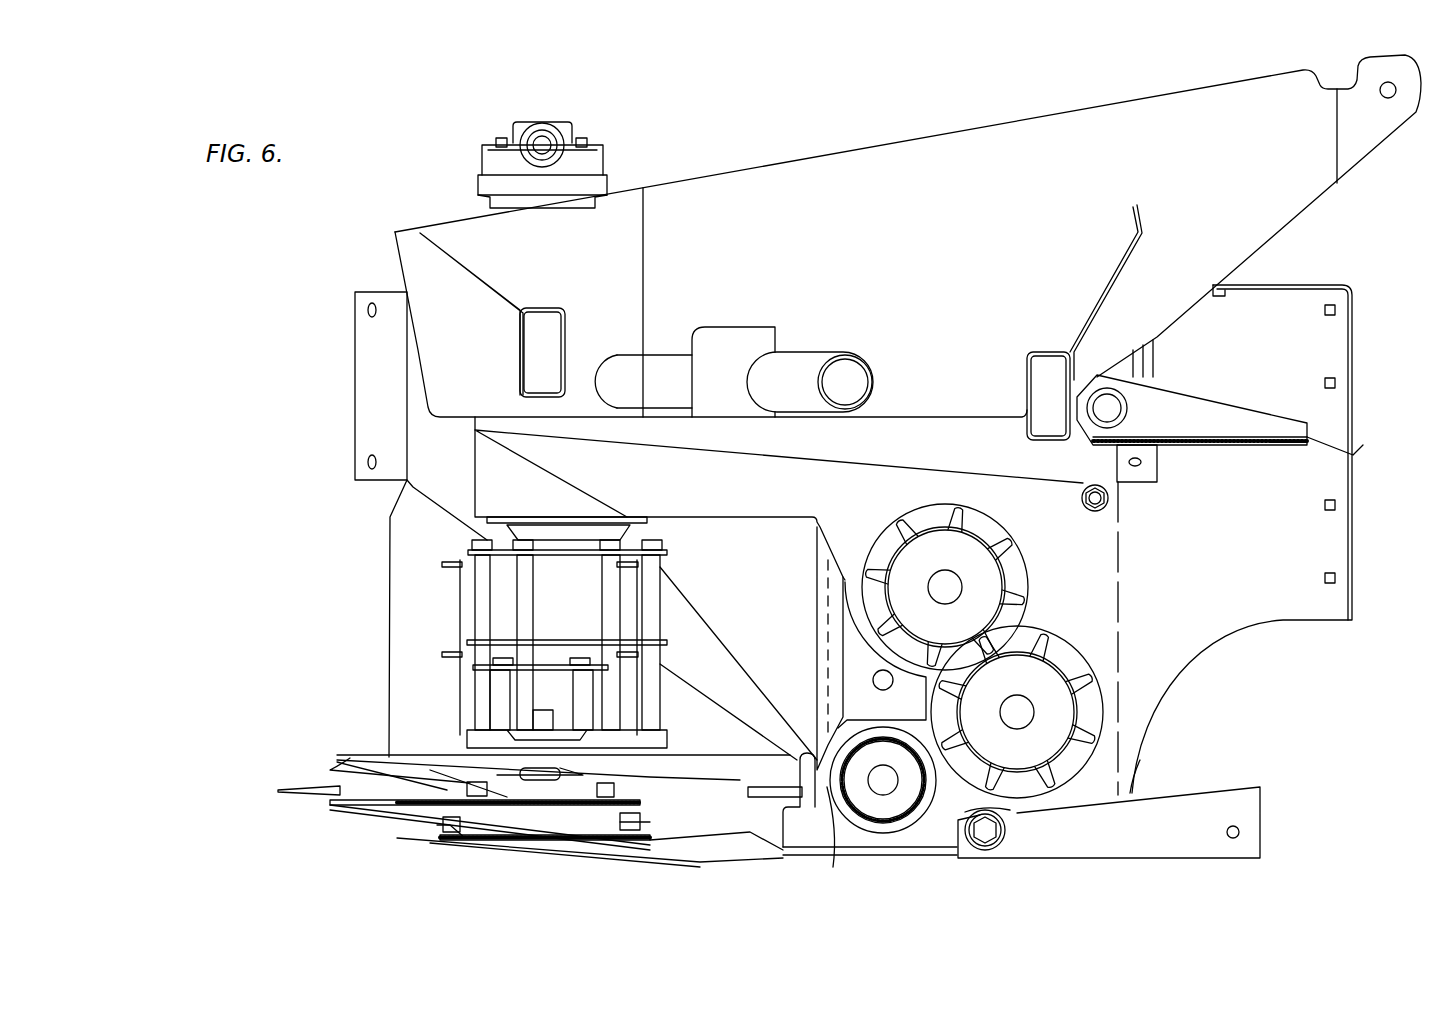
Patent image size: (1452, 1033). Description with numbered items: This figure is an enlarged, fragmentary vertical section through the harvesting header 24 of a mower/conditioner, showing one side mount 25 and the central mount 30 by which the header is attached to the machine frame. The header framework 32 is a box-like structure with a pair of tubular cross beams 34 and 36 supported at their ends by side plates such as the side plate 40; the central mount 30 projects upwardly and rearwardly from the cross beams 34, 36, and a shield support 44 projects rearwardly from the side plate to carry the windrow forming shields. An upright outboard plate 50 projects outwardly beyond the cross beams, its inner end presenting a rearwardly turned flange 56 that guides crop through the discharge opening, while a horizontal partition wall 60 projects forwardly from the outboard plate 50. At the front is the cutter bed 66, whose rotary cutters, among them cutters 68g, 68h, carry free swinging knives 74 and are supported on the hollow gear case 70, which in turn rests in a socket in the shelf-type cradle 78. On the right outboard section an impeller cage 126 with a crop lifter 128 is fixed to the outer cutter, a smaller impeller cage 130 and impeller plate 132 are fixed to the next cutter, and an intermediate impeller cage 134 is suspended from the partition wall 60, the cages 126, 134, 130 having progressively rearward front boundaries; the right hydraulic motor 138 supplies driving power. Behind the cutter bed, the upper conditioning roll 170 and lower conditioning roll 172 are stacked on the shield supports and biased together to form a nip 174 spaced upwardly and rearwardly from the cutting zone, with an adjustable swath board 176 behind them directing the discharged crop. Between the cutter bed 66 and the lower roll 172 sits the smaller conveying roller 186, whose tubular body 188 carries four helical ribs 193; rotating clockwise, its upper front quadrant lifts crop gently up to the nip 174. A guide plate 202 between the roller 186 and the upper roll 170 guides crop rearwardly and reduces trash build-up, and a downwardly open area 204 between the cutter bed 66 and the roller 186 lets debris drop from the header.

The harvesting header 24 is at (318, 420).
The side mount 25 is at (1252, 812).
The central mount 30 is at (1063, 120).
The header framework 32 is at (1268, 500).
The tubular cross beam 34 is at (545, 308).
The tubular cross beam 36 is at (1052, 352).
The side plate 40 is at (1147, 473).
The shield support 44 is at (1338, 340).
The outboard plate 50 is at (805, 535).
The rearwardly turned flange 56 is at (826, 592).
The horizontal partition wall 60 is at (735, 530).
The cutter bed 66 is at (405, 825).
The rotary cutter 68g is at (660, 775).
The rotary cutter 68h is at (400, 783).
The gear case 70 is at (520, 822).
The free swinging knife 74 is at (285, 790).
The cradle 78 is at (612, 845).
The impeller cage 126 is at (503, 644).
The crop lifter 128 is at (355, 758).
The impeller cage 130 is at (500, 705).
The impeller plate 132 is at (353, 757).
The intermediate impeller cage 134 is at (480, 618).
The hydraulic motor 138 is at (585, 180).
The upper conditioning roll 170 is at (1000, 538).
The lower conditioning roll 172 is at (1085, 665).
The nip 174 is at (935, 680).
The swath board 176 is at (1310, 437).
The conveying roller 186 is at (933, 803).
The cylindrical body 188 is at (913, 817).
The helical rib 193 is at (838, 840).
The guide plate 202 is at (855, 650).
The downwardly open area 204 is at (800, 845).